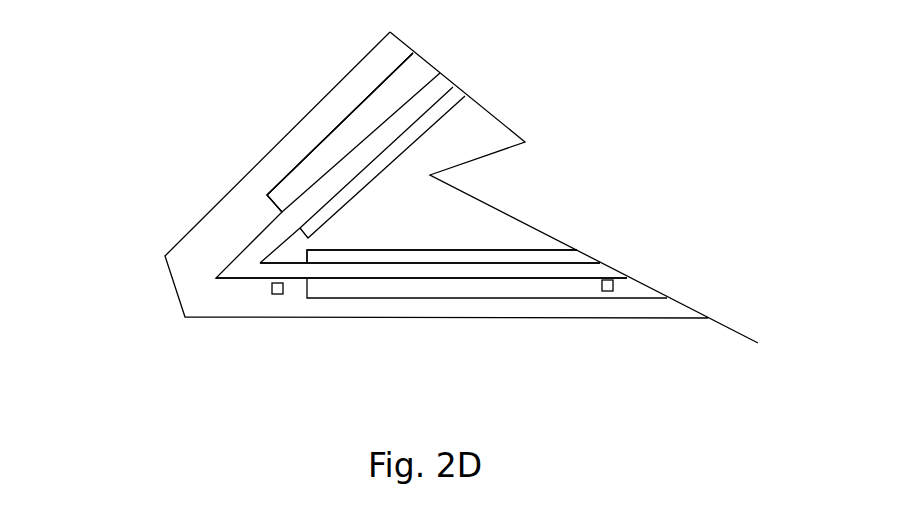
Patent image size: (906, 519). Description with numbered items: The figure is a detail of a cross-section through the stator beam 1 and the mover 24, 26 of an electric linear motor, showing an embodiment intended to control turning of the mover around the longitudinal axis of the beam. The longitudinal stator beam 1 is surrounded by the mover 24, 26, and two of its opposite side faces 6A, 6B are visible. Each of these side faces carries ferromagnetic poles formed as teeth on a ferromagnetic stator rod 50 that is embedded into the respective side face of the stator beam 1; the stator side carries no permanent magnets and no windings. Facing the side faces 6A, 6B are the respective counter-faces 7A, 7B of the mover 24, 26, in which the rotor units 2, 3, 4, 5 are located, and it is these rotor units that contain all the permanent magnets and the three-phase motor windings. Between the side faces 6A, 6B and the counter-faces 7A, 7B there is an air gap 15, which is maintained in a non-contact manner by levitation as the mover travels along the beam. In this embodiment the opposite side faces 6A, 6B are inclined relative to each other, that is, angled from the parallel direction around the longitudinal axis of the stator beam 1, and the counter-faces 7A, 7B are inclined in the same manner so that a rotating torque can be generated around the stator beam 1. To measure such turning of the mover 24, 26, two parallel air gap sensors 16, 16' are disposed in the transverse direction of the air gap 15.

The stator beam 1 is at (411, 218).
The rotor unit 2 is at (306, 121).
The rotor unit 3 is at (343, 130).
The rotor unit 4 is at (487, 326).
The rotor unit 5 is at (560, 288).
The side face 6A is at (360, 168).
The side face 6B is at (432, 262).
The counter-face 7A is at (400, 107).
The counter-face 7B is at (387, 280).
The air gap 15 is at (338, 272).
The air gap sensor 16 is at (256, 331).
The air gap sensor 16' is at (643, 325).
The mover 24 is at (410, 187).
The mover 26 is at (150, 229).
The ferromagnetic stator rod 50 is at (323, 212).